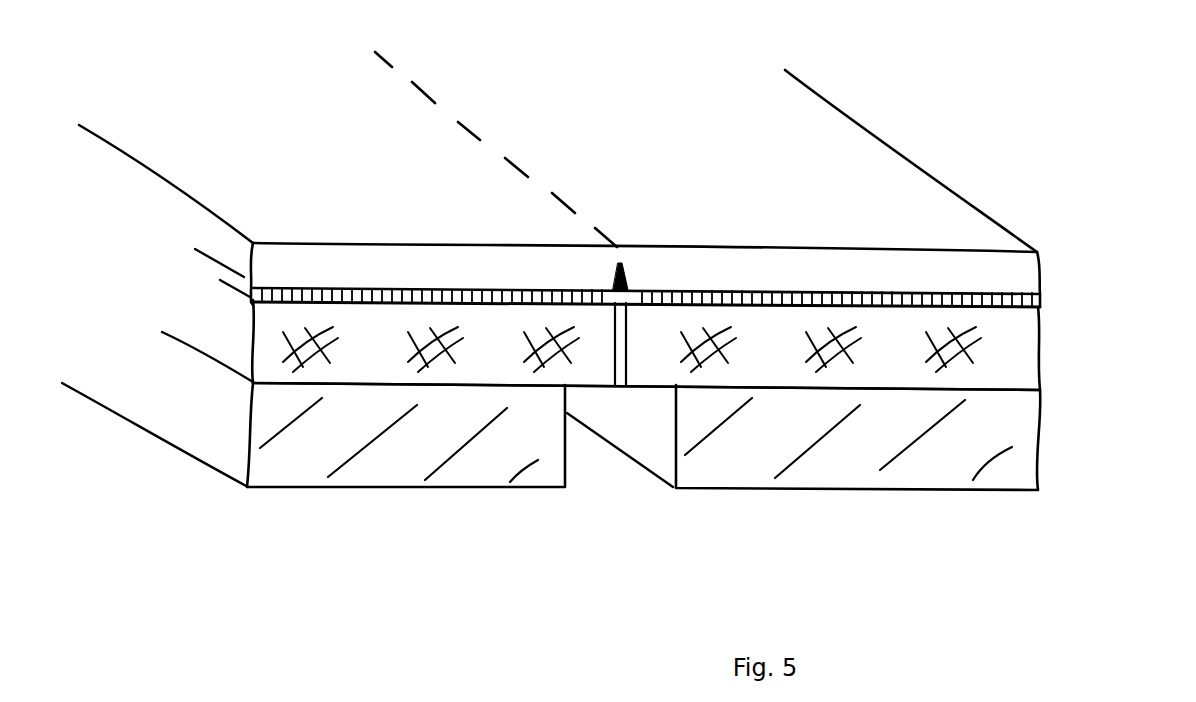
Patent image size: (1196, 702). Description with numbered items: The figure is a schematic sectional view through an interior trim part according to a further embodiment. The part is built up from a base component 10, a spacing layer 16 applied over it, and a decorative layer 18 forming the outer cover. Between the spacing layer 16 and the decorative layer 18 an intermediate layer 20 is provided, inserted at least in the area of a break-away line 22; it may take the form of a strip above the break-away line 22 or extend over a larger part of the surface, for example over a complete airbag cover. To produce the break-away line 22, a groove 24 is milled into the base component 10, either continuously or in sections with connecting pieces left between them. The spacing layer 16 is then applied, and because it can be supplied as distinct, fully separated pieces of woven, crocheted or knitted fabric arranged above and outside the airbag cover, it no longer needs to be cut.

The base component 10 is at (1003, 418).
The spacing layer 16 is at (1010, 350).
The decorative layer 18 is at (1003, 278).
The intermediate layer 20 is at (785, 297).
The break-away line 22 is at (475, 130).
The groove 24 is at (608, 458).